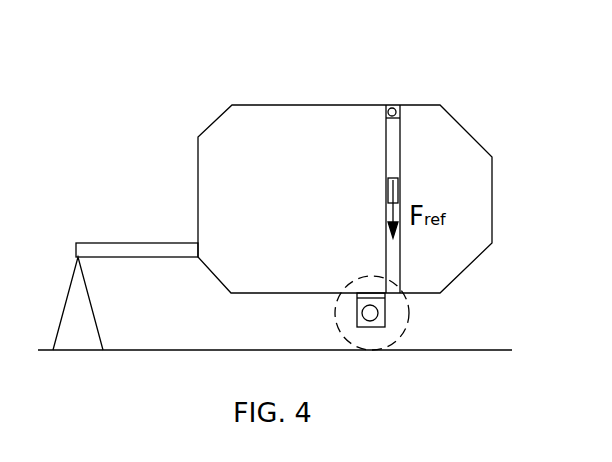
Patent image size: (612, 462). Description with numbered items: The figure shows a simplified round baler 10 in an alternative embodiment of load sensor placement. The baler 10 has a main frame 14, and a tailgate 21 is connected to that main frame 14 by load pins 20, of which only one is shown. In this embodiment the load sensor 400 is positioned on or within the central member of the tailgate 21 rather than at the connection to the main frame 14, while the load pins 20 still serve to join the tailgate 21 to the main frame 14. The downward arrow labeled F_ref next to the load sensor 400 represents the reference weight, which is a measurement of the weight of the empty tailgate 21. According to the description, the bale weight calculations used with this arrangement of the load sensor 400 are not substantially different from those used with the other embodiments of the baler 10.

The baler 10 is at (200, 107).
The main frame 14 is at (243, 105).
The load pin 20 is at (386, 111).
The tailgate 21 is at (463, 128).
The load sensor 400 is at (388, 180).